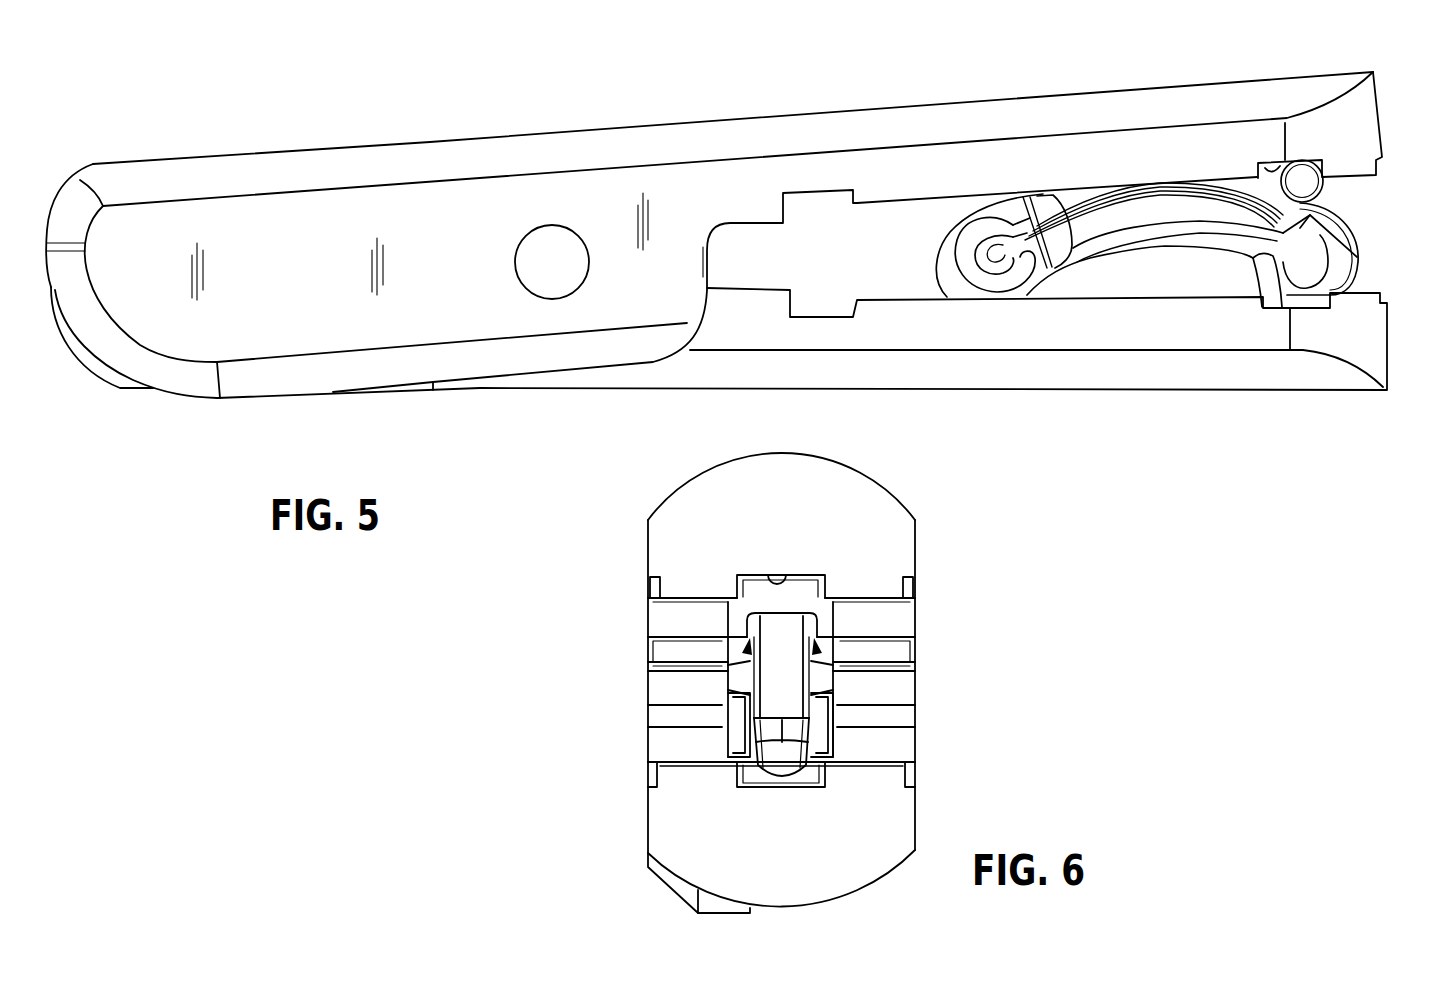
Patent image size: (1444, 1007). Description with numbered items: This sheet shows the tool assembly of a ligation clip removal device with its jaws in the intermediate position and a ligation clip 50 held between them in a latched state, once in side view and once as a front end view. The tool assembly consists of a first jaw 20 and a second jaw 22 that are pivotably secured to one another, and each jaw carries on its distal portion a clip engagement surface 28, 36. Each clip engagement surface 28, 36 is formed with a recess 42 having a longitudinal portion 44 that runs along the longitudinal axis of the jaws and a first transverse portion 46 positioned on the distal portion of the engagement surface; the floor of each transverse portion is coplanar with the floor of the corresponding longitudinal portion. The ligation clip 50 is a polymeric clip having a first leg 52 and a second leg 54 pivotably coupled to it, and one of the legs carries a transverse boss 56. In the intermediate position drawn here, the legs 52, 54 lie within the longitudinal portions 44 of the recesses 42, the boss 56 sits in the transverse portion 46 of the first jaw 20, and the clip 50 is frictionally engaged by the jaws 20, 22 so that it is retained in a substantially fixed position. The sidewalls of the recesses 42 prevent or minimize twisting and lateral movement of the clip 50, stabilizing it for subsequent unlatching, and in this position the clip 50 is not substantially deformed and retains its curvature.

In FIG. 5, the first jaw 20 is at (1009, 95).
In FIG. 6, the first jaw 20 is at (674, 485).
In FIG. 5, the second jaw 22 is at (1060, 398).
In FIG. 6, the second jaw 22 is at (638, 830).
In FIG. 6, the clip engagement surface 28 is at (876, 600).
In FIG. 6, the clip engagement surface 36 is at (886, 760).
In FIG. 6, the recess 42 is at (756, 568).
In FIG. 6, the longitudinal portion 44 is at (785, 575).
In FIG. 5, the first transverse portion 46 is at (1277, 162).
In FIG. 5, the ligation clip 50 is at (1151, 258).
In FIG. 5, the first leg 52 is at (1063, 190).
In FIG. 5, the second leg 54 is at (1192, 234).
In FIG. 5, the transverse boss 56 is at (1302, 180).